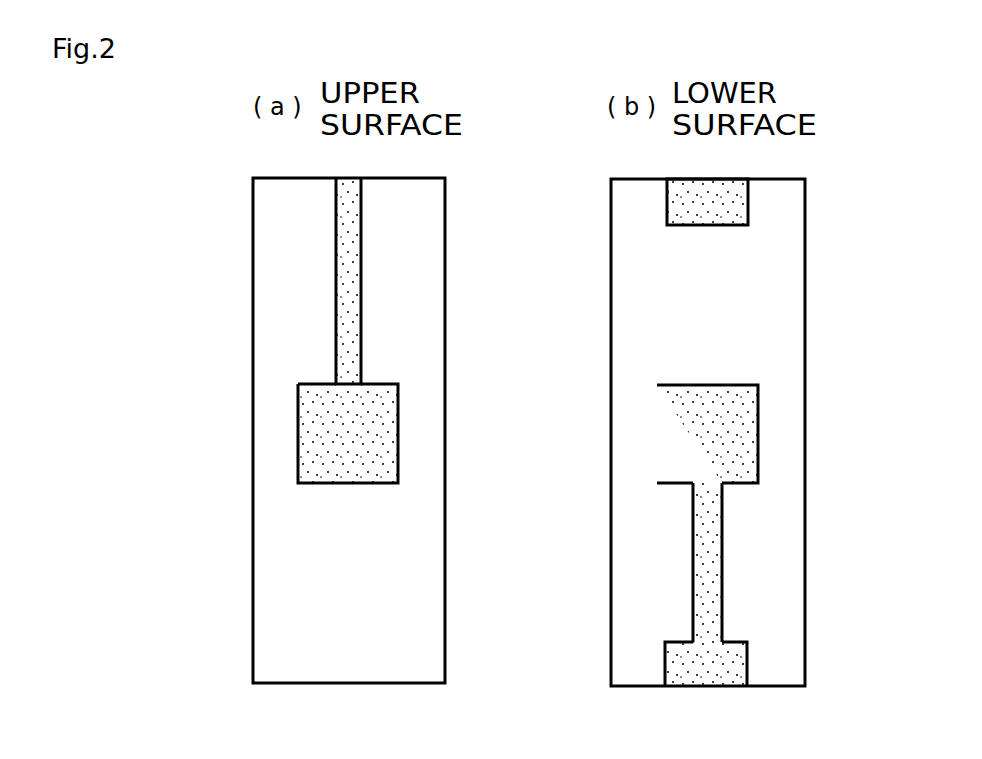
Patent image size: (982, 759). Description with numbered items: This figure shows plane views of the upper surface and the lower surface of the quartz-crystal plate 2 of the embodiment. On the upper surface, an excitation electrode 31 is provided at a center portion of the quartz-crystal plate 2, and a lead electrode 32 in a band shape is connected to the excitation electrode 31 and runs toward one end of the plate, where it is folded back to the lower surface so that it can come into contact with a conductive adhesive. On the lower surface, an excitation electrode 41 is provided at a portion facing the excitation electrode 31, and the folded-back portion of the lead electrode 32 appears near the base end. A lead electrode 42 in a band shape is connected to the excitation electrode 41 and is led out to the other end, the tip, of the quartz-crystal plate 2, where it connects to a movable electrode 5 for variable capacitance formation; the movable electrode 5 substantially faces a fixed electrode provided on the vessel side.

The quartz-crystal plate 2 is at (345, 684).
The excitation electrode 31 is at (398, 430).
The lead electrode 32 is at (361, 318).
The excitation electrode 41 is at (758, 430).
The lead electrode 42 is at (722, 568).
The movable electrode 5 is at (747, 662).